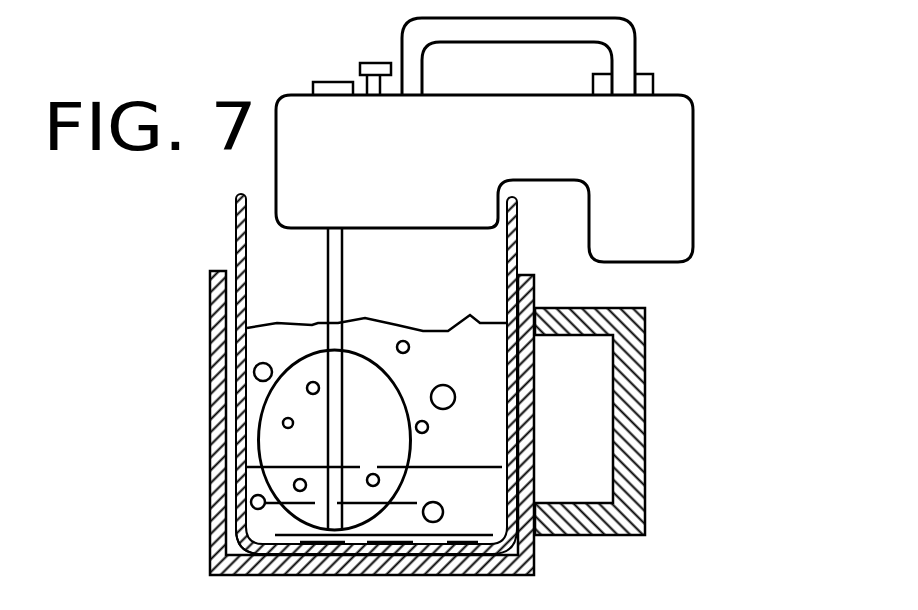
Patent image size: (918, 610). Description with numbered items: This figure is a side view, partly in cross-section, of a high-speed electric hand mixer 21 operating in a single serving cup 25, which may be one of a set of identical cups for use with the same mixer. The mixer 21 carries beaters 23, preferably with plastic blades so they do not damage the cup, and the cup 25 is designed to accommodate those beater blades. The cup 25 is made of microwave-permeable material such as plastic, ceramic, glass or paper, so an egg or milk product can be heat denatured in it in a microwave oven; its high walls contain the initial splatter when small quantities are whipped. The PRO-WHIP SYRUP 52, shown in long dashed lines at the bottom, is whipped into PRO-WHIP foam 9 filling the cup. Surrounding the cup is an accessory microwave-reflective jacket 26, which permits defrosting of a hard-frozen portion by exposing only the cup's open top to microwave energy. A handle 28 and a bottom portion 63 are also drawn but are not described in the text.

The hand mixer 21 is at (697, 88).
The beaters 23 is at (317, 350).
The cup 25 is at (240, 367).
The microwave-reflective jacket 26 is at (212, 420).
The container handle 28 is at (635, 332).
The PRO-WHIP foam 9 is at (483, 443).
The PRO-WHIP SYRUP 52 is at (500, 512).
The liner bottom 63 is at (240, 527).